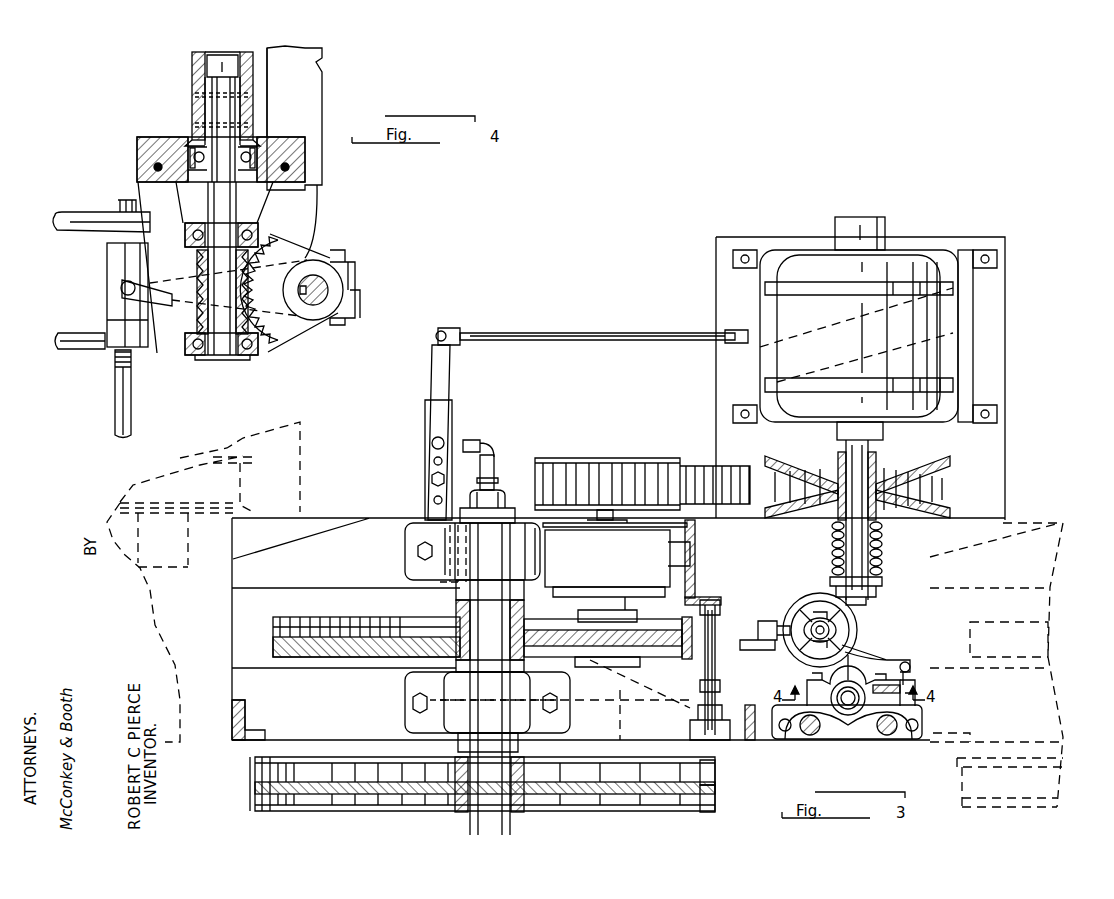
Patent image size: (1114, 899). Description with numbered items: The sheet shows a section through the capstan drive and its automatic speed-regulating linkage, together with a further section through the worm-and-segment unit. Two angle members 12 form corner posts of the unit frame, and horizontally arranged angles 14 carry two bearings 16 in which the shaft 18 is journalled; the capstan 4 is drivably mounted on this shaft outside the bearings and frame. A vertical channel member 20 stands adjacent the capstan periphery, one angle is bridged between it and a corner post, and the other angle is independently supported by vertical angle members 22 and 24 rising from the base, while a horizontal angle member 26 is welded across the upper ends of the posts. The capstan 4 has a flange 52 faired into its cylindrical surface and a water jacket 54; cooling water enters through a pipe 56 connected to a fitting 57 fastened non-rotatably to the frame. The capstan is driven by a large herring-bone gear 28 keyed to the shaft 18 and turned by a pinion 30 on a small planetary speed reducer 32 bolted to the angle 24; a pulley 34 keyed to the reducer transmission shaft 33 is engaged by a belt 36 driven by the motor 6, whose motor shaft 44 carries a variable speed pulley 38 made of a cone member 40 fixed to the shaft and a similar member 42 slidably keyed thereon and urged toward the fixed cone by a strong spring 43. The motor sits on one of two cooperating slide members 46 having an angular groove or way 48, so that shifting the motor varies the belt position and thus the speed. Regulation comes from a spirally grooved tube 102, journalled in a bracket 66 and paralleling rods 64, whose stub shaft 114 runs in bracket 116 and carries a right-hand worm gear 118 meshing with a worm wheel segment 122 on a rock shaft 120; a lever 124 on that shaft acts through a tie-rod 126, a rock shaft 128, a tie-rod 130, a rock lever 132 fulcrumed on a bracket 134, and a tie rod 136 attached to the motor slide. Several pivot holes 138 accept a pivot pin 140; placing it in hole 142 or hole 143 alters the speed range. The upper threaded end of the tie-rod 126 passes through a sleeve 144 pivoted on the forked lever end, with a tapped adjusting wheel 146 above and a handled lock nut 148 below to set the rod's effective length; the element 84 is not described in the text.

In FIG. 3, the capstan 4 is at (570, 800).
In FIG. 3, the motor 6 is at (905, 265).
In FIG. 3, the angle members 12 is at (235, 738).
In FIG. 3, the horizontally arranged angles 14 is at (352, 530).
In FIG. 3, the bearings 16 is at (487, 637).
In FIG. 3, the shaft 18 is at (480, 800).
In FIG. 3, the vertical channel member 20 is at (750, 740).
In FIG. 3, the vertical angle member 22 is at (368, 588).
In FIG. 3, the vertical angle member 24 is at (698, 575).
In FIG. 3, the horizontal angle member 26 is at (770, 735).
In FIG. 3, the herring-bone gear 28 is at (345, 657).
In FIG. 3, the pinion 30 is at (620, 660).
In FIG. 3, the planetary speed reducer 32 is at (616, 571).
In FIG. 3, the transmission shaft 33 is at (608, 525).
In FIG. 3, the pulley 34 is at (596, 460).
In FIG. 3, the belt 36 is at (716, 466).
In FIG. 3, the variable speed pulley 38 is at (795, 515).
In FIG. 3, the cone member 40 is at (918, 462).
In FIG. 3, the slidable cone member 42 is at (925, 510).
In FIG. 3, the spring 43 is at (875, 555).
In FIG. 3, the motor shaft 44 is at (866, 460).
In FIG. 3, the slide members 46 is at (970, 380).
In FIG. 3, the groove or way 48 is at (968, 308).
In FIG. 3, the flange 52 is at (715, 765).
In FIG. 3, the water jacket 54 is at (715, 795).
In FIG. 3, the pipe 56 is at (472, 440).
In FIG. 3, the fitting 57 is at (494, 470).
In FIG. 3, the rods 64 is at (812, 740).
In FIG. 4, the bracket 66 is at (155, 140).
In FIG. 3, the bracket 66 is at (865, 715).
In FIG. 4, the bracket 84 is at (312, 105).
In FIG. 3, the bracket 84 is at (897, 692).
In FIG. 4, the tube 102 is at (192, 65).
In FIG. 3, the tube 102 is at (848, 712).
In FIG. 4, the stub shaft 114 is at (225, 205).
In FIG. 4, the bracket 116 is at (290, 228).
In FIG. 3, the bracket 116 is at (808, 680).
In FIG. 4, the worm gear 118 is at (197, 325).
In FIG. 4, the rock shaft 120 is at (320, 300).
In FIG. 4, the worm wheel segment 122 is at (288, 322).
In FIG. 4, the lever 124 is at (162, 300).
In FIG. 3, the lever 124 is at (862, 660).
In FIG. 4, the tie-rod 126 is at (115, 410).
In FIG. 3, the tie-rod 126 is at (770, 621).
In FIG. 3, the rock shaft 128 is at (722, 645).
In FIG. 3, the tie-rod 130 is at (618, 725).
In FIG. 3, the rock lever 132 is at (442, 372).
In FIG. 3, the bracket 134 is at (426, 512).
In FIG. 3, the tie rod 136 is at (592, 333).
In FIG. 3, the pivot holes 138 is at (433, 498).
In FIG. 3, the pivot pin 140 is at (440, 472).
In FIG. 3, the hole 142 is at (433, 440).
In FIG. 3, the hole 143 is at (460, 538).
In FIG. 4, the sleeve 144 is at (110, 320).
In FIG. 4, the adjusting wheel 146 is at (90, 215).
In FIG. 3, the adjusting wheel 146 is at (800, 605).
In FIG. 4, the lock nut 148 is at (72, 350).